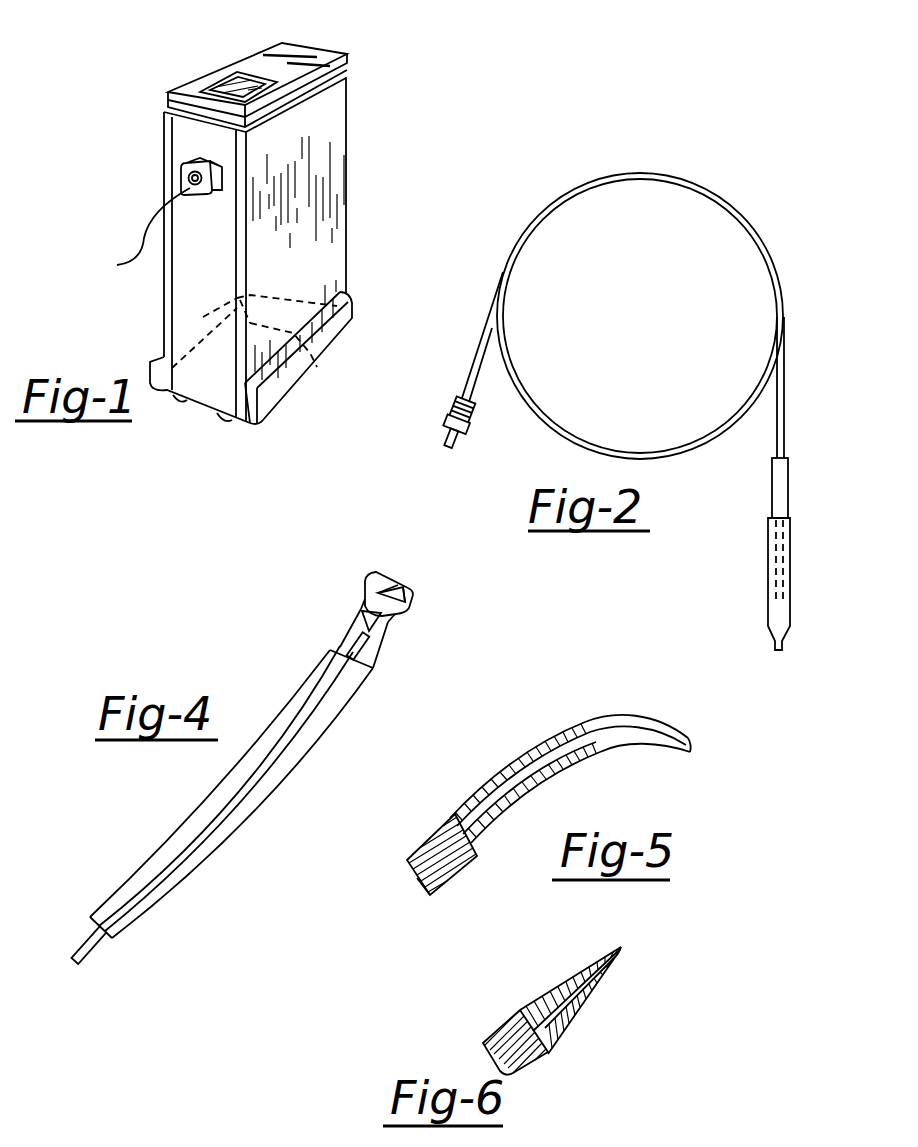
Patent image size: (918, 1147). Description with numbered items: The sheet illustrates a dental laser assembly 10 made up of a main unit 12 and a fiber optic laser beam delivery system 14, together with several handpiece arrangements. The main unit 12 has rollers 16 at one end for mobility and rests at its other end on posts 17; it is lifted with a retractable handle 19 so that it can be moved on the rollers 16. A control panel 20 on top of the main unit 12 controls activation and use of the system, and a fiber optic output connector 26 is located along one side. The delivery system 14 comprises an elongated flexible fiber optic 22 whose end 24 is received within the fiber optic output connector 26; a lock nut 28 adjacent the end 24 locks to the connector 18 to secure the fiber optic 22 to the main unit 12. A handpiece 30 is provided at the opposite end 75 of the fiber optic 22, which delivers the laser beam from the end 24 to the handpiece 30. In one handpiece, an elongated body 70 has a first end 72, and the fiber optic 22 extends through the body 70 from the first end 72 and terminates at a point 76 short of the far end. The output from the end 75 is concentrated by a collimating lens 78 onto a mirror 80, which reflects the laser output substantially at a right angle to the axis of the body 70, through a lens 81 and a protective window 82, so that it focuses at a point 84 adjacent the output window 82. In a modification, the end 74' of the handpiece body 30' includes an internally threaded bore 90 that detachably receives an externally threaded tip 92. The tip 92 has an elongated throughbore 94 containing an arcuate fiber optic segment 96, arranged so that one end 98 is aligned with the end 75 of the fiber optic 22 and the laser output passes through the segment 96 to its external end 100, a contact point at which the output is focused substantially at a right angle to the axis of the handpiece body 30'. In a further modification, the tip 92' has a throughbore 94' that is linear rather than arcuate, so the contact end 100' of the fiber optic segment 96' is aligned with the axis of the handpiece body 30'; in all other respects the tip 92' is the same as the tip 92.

In FIG. 1, the dental laser assembly 10 is at (352, 55).
In FIG. 1, the main unit 12 is at (350, 192).
In FIG. 2, the fiber optic laser beam delivery system 14 is at (748, 207).
In FIG. 1, the rollers 16 is at (215, 320).
In FIG. 1, the posts 17 is at (222, 420).
In FIG. 1, the connector 18 is at (191, 180).
In FIG. 1, the retractable handle 19 is at (168, 94).
In FIG. 1, the control panel 20 is at (228, 82).
In FIG. 2, the fiber optic 22 is at (782, 368).
In FIG. 4, the fiber optic 22 is at (78, 947).
In FIG. 2, the end of fiber optic 24 is at (458, 447).
In FIG. 1, the fiber optic output connector 26 is at (137, 233).
In FIG. 2, the lock nut 28 is at (452, 442).
In FIG. 2, the handpiece 30 is at (812, 572).
In FIG. 4, the handpiece 30 is at (231, 794).
In FIG. 5, the handpiece body 30' is at (432, 854).
In FIG. 6, the handpiece body 30' is at (507, 1028).
In FIG. 4, the elongated body 70 is at (227, 803).
In FIG. 4, the first end 72 is at (117, 940).
In FIG. 5, the end of handpiece body 74' is at (531, 795).
In FIG. 2, the end of fiber optic 75 is at (777, 594).
In FIG. 4, the end of fiber optic 75 is at (362, 650).
In FIG. 5, the end of fiber optic 75 is at (417, 877).
In FIG. 4, the termination point 76 is at (350, 628).
In FIG. 4, the collimating lens 78 is at (364, 606).
In FIG. 4, the mirror 80 is at (392, 573).
In FIG. 4, the lens 81 is at (398, 590).
In FIG. 4, the protective window 82 is at (412, 598).
In FIG. 4, the focal point 84 is at (400, 635).
In FIG. 5, the internally threaded bore 90 is at (460, 808).
In FIG. 5, the externally threaded tip 92 is at (520, 770).
In FIG. 6, the tip 92' is at (569, 985).
In FIG. 5, the elongated throughbore 94 is at (627, 713).
In FIG. 6, the throughbore 94' is at (569, 966).
In FIG. 5, the arcuate fiber optic segment 96 is at (638, 708).
In FIG. 6, the fiber optic segment 96' is at (593, 1002).
In FIG. 5, the end of fiber optic segment 98 is at (470, 865).
In FIG. 5, the external end 100 is at (686, 735).
In FIG. 6, the contact end 100' is at (654, 956).